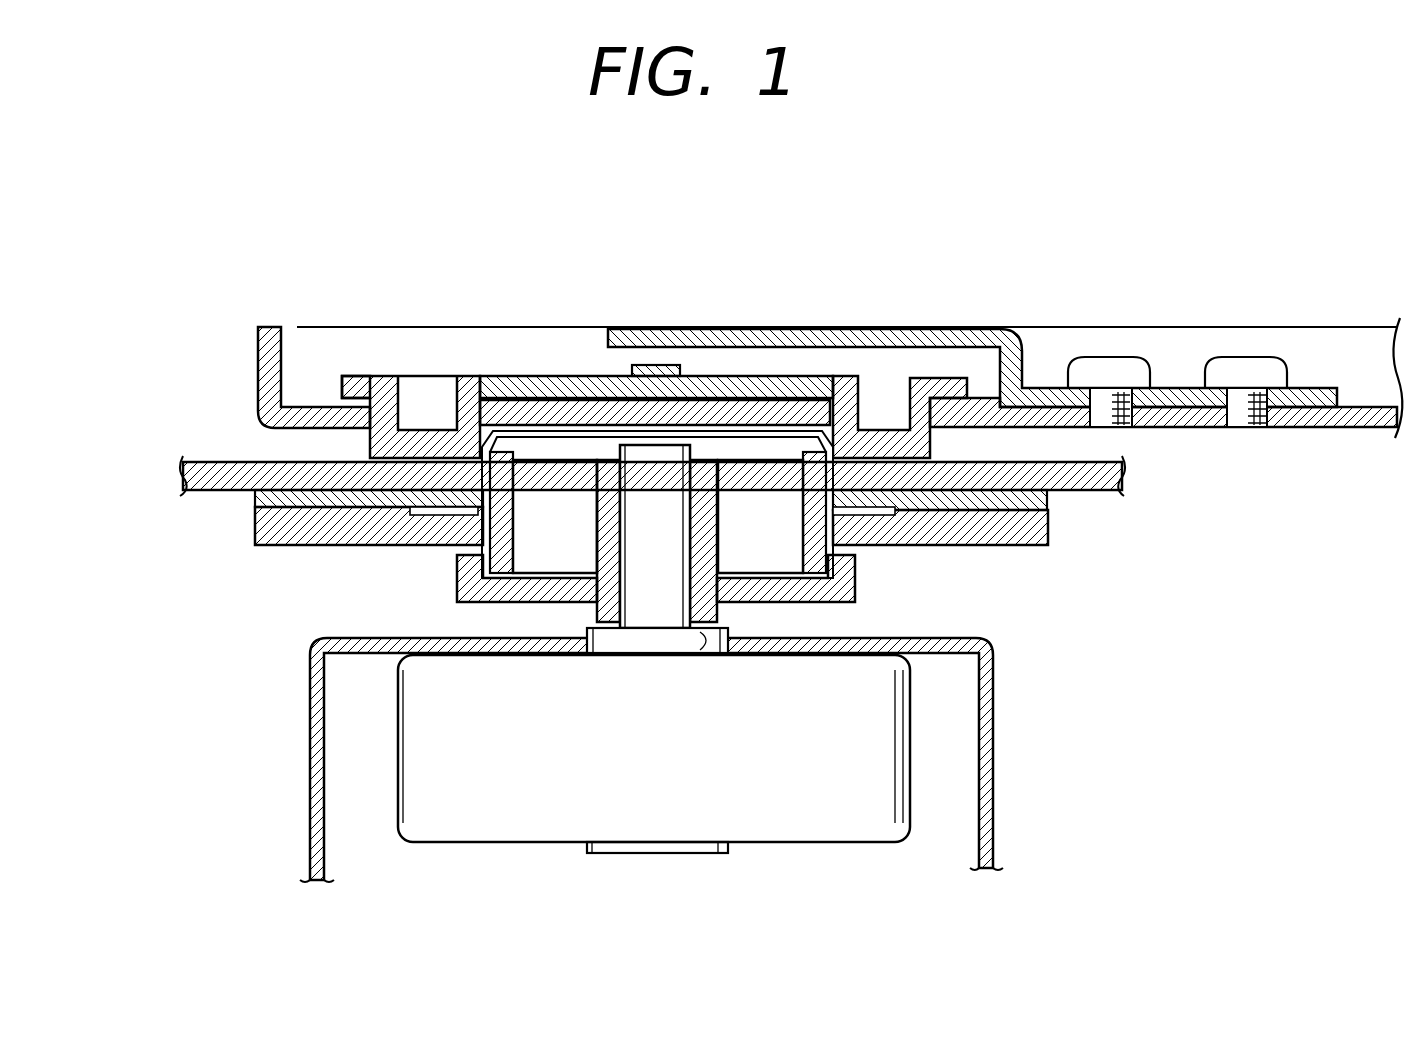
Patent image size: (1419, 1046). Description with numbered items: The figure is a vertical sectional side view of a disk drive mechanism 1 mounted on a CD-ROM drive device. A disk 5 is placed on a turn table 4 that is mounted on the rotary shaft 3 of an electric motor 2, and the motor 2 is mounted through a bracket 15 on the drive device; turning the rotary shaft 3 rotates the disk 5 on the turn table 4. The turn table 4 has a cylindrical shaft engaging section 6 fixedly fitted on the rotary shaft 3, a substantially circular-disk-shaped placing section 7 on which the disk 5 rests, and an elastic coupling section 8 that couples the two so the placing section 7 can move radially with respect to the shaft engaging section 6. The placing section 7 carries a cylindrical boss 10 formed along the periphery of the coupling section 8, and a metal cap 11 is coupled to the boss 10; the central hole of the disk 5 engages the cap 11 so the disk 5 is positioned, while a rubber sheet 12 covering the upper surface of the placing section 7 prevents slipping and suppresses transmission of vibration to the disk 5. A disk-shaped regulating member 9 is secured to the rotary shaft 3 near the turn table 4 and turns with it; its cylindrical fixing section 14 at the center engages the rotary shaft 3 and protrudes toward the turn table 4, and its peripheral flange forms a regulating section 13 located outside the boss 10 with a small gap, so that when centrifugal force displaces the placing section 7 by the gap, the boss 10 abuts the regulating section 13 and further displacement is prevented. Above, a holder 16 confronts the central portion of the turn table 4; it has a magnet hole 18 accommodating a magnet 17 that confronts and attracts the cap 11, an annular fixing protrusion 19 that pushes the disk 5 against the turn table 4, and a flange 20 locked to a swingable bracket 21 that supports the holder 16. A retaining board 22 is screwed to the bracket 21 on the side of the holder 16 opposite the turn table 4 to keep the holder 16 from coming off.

The disk drive mechanism 1 is at (278, 282).
The electric motor 2 is at (853, 835).
The rotary shaft 3 is at (627, 510).
The turn table 4 is at (972, 552).
The disk 5 is at (215, 470).
The shaft engaging section 6 is at (710, 507).
The placing section 7 is at (335, 540).
The elastic coupling section 8 is at (543, 560).
The regulating member 9 is at (470, 612).
The cylindrical boss 10 is at (522, 505).
The cap 11 is at (843, 415).
The rubber sheet 12 is at (1048, 510).
The regulating section 13 is at (848, 570).
The cylindrical fixing section 14 is at (700, 628).
The bracket 15 is at (992, 765).
The holder 16 is at (452, 366).
The magnet 17 is at (617, 403).
The magnet hole 18 is at (488, 420).
The annular fixing protrusion 19 is at (933, 473).
The flange 20 is at (360, 376).
The bracket 21 is at (262, 350).
The retaining board 22 is at (722, 327).